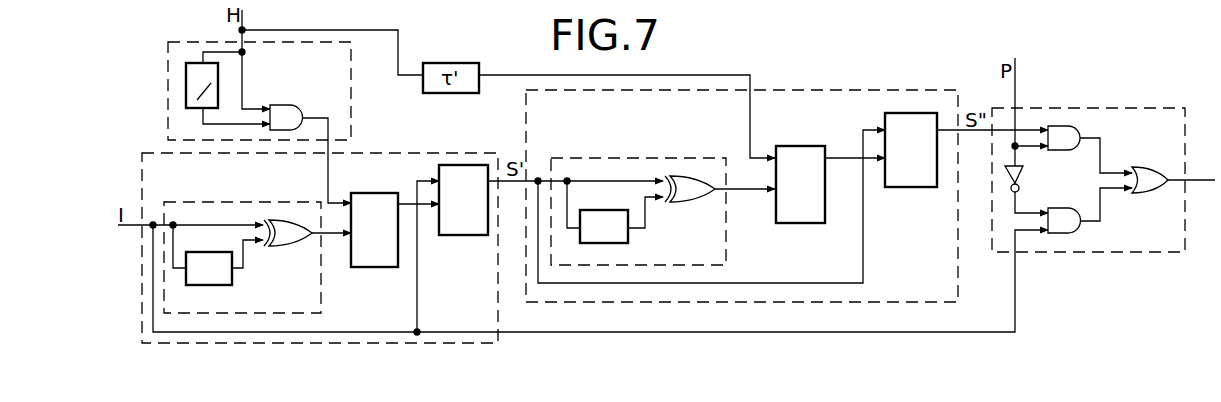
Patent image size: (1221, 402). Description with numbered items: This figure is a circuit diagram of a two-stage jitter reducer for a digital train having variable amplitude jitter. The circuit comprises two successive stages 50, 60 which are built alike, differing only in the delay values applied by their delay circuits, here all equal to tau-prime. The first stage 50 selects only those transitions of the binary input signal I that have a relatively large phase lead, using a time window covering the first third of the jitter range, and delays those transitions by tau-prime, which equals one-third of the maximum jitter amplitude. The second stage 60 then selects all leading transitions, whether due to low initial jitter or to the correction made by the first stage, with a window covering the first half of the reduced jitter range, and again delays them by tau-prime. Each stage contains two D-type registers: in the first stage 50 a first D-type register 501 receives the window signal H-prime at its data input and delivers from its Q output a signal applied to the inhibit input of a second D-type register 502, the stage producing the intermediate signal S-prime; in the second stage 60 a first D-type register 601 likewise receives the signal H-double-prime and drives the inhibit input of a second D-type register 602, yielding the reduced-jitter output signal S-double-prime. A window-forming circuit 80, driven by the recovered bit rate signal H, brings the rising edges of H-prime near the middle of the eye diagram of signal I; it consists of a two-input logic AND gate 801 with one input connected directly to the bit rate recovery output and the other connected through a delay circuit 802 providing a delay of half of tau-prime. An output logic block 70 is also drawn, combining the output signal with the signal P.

The first stage 50 is at (443, 128).
The first D-type register 501 is at (363, 257).
The second D-type register 502 is at (453, 225).
The second stage 60 is at (835, 68).
The first D-type register 601 is at (792, 212).
The second D-type register 602 is at (923, 173).
The output selection logic 70 is at (1090, 108).
The window-forming circuit 80 is at (353, 118).
The two-input logic AND gate 801 is at (283, 105).
The delay circuit 802 is at (186, 73).